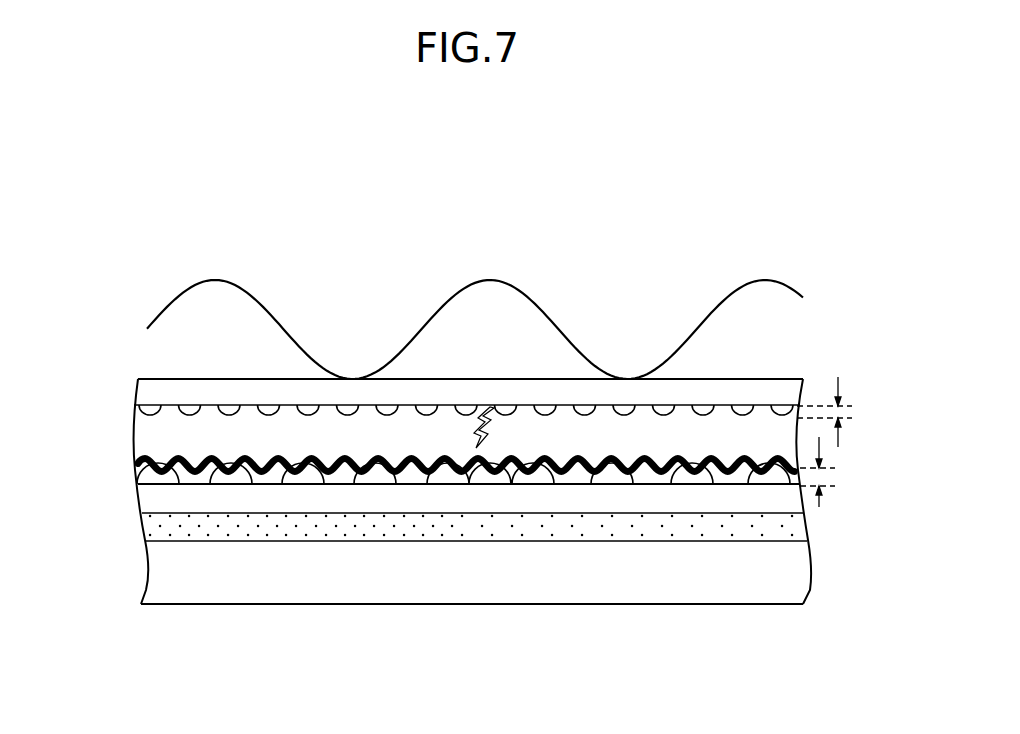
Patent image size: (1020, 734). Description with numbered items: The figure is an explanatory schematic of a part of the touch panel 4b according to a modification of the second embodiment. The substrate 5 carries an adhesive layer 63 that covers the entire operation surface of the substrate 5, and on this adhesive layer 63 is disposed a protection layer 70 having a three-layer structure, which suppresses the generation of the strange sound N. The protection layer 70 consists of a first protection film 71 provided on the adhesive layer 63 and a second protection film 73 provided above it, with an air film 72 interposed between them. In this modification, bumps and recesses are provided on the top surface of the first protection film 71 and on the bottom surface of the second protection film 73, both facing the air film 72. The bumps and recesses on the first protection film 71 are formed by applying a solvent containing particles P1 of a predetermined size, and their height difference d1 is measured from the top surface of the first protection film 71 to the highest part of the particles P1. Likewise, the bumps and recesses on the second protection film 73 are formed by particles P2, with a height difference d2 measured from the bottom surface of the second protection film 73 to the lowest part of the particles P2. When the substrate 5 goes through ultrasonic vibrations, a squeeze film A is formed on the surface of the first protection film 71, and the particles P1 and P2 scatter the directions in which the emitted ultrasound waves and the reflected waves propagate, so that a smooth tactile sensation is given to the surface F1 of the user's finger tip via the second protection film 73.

The touch panel 4b is at (390, 190).
The protection layer 70 is at (407, 536).
The second protection film 73 is at (434, 536).
The air film 72 is at (133, 445).
The first protection film 71 is at (435, 576).
The adhesive layer 63 is at (145, 524).
The substrate 5 is at (146, 575).
The surface of the finger tip F1 is at (173, 300).
The strange sound N is at (495, 413).
The squeeze film A is at (742, 453).
The height difference d1 is at (828, 471).
The height difference d2 is at (852, 412).
The particles P1 is at (233, 477).
The particles P2 is at (380, 417).